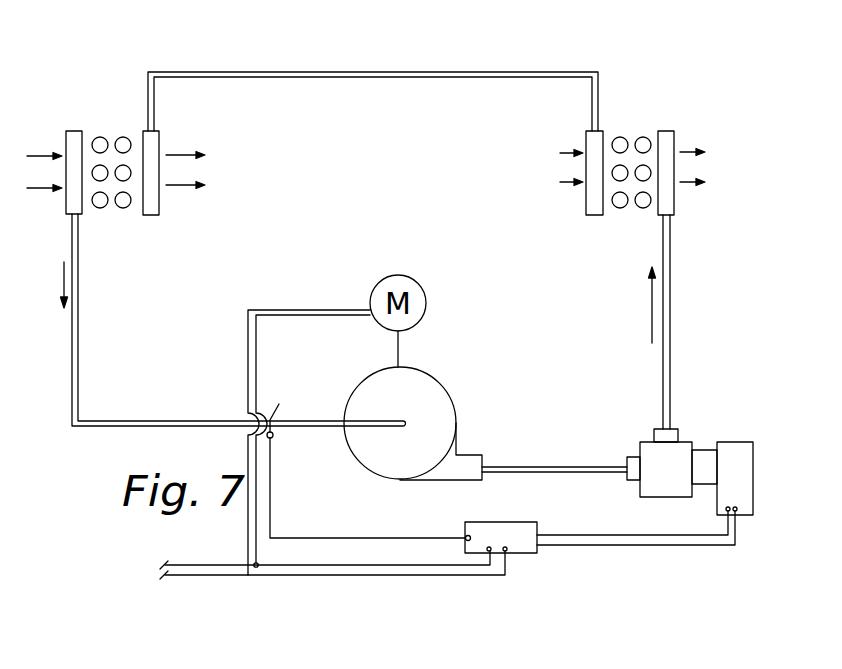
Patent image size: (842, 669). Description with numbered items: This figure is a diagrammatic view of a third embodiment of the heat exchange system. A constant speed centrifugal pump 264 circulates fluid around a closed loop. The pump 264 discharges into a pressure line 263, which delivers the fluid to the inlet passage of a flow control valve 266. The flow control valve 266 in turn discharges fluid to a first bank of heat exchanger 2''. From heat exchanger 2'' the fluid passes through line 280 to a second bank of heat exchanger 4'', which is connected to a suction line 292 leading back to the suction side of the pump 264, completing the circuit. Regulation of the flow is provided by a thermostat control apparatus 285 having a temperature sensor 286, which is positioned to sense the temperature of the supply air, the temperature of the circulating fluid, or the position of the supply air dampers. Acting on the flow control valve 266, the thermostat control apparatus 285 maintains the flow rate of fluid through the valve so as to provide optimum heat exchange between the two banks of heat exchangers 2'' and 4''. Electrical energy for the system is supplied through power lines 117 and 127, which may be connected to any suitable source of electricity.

The heat exchanger 4'' is at (116, 141).
The heat exchanger 2'' is at (632, 139).
The line 280 is at (320, 73).
The suction line 292 is at (79, 332).
The constant speed centrifugal pump 264 is at (359, 466).
The temperature sensor 286 is at (279, 408).
The pressure line 263 is at (545, 465).
The flow control valve 266 is at (693, 440).
The thermostat control apparatus 285 is at (513, 522).
The power line 117 is at (417, 560).
The power line 127 is at (445, 575).